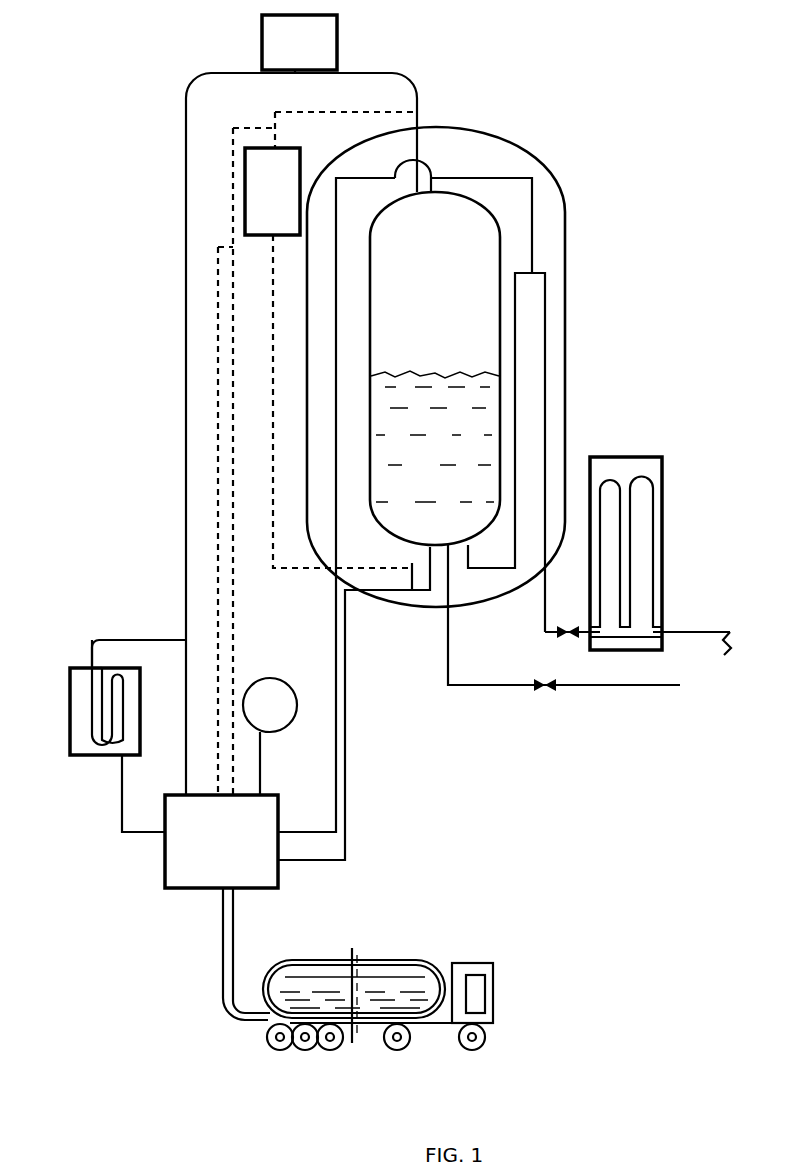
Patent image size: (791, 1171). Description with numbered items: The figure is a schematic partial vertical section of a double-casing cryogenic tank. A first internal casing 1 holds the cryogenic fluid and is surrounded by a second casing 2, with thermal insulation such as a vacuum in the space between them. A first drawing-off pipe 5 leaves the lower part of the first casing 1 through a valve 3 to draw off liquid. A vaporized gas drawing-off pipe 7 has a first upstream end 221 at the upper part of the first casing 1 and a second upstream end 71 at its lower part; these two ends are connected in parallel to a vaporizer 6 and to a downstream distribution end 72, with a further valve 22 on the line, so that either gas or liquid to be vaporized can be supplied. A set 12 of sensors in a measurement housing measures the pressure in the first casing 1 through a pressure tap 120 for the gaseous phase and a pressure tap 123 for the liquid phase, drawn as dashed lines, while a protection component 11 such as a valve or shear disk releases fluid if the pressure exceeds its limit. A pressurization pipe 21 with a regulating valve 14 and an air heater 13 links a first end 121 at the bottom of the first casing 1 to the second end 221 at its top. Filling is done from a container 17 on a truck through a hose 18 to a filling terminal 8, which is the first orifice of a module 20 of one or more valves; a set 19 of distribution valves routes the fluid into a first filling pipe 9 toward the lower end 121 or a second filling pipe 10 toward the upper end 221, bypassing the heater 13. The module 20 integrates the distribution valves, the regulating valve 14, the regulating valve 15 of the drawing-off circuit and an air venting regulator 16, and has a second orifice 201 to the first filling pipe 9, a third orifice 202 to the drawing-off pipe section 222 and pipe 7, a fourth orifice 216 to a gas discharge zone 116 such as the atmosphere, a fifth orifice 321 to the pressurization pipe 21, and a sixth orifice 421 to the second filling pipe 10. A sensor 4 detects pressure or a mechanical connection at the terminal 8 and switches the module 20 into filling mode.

The first internal casing 1 is at (494, 218).
The second casing 2 is at (568, 268).
The valve 3 is at (560, 682).
The sensor 4 is at (216, 891).
The first drawing-off pipe 5 is at (623, 687).
The vaporizer 6 is at (630, 456).
The vaporized gas drawing-off pipe 7 is at (688, 630).
The filling terminal 8 is at (216, 891).
The first filling pipe 9 is at (349, 617).
The second filling pipe 10 is at (186, 553).
The protection component 11 is at (311, 53).
The set of sensors 12 is at (284, 202).
The heater 13 is at (70, 664).
The regulating valve 14 is at (221, 841).
The valve 15 is at (221, 841).
The air venting regulator 16 is at (221, 841).
The container 17 is at (307, 980).
The hose 18 is at (236, 946).
The set of distribution valves 19 is at (221, 841).
The module of one or more valves 20 is at (281, 806).
The pressurization pipe 21 is at (120, 797).
The valve 22 is at (562, 641).
The second upstream end 71 is at (479, 552).
The downstream distribution end 72 is at (739, 655).
The zone for discharging gas 116 is at (283, 716).
The pressure tap 120 is at (272, 108).
The first end 121 is at (428, 552).
The pressure tap 123 is at (265, 252).
The second orifice 201 is at (283, 867).
The third orifice 202 is at (283, 840).
The fourth orifice 216 is at (270, 784).
The first upstream end 221 is at (436, 178).
The vaporized gas drawing-off pipe 222 is at (330, 657).
The fifth orifice 321 is at (165, 838).
The sixth orifice 421 is at (177, 793).